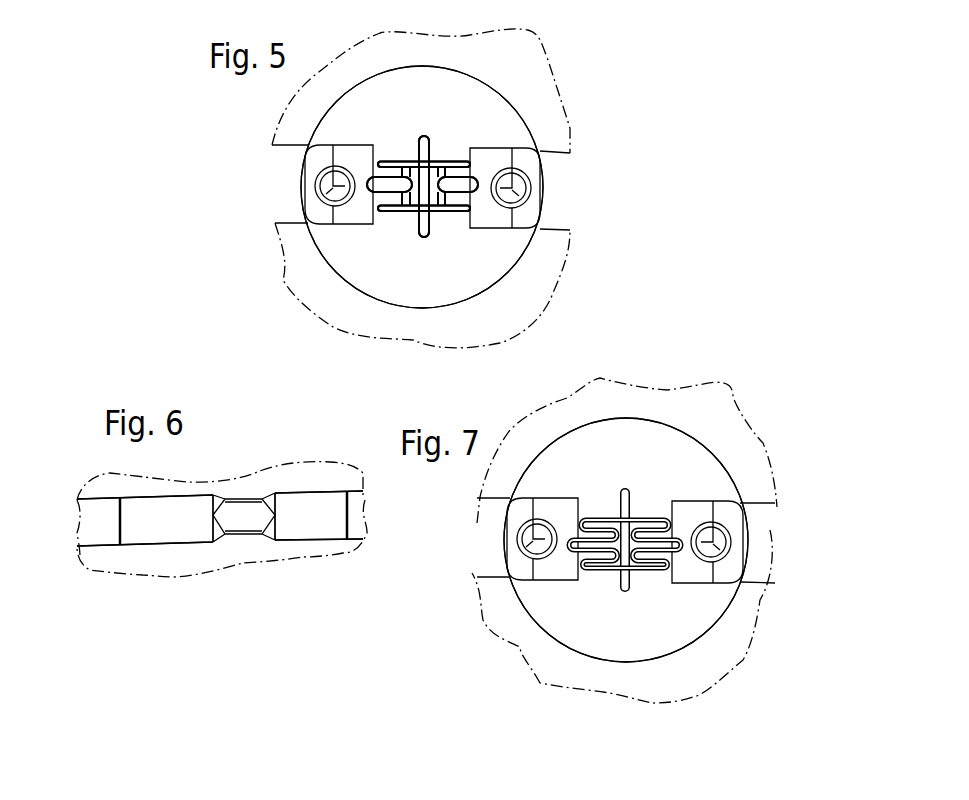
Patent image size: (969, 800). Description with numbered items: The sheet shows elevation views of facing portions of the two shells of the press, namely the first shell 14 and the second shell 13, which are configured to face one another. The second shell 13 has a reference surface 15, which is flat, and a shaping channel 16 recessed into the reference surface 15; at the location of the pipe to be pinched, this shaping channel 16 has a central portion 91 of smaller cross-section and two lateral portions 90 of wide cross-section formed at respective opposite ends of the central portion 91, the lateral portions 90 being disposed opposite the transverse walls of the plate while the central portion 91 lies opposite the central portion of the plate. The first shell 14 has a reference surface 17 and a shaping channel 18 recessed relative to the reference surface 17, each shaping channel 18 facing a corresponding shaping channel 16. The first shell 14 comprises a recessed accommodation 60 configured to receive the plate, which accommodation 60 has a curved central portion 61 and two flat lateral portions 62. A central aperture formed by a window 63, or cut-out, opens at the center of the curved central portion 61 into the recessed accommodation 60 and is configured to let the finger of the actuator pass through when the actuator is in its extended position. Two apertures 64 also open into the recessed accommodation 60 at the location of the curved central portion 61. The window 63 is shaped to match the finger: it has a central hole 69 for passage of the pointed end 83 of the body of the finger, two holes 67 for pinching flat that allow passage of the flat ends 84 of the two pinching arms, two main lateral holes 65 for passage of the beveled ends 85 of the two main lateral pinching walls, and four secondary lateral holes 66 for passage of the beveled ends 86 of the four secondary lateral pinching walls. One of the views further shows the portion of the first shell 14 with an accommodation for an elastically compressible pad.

In FIG. 6, the second shell 13 is at (318, 468).
In FIG. 5, the first shell 14 is at (300, 262).
In FIG. 7, the first shell 14 is at (730, 403).
In FIG. 6, the reference surface 15 is at (238, 488).
In FIG. 6, the shaping channel 16 is at (360, 525).
In FIG. 5, the reference surface 17 is at (587, 4).
In FIG. 5, the shaping channel 18 is at (285, 160).
In FIG. 7, the shaping channel 18 is at (485, 563).
In FIG. 5, the recessed accommodation 60 is at (352, 268).
In FIG. 7, the recessed accommodation 60 is at (706, 614).
In FIG. 5, the curved central portion 61 is at (355, 153).
In FIG. 7, the curved central portion 61 is at (553, 507).
In FIG. 5, the flat lateral portion 62 is at (502, 107).
In FIG. 7, the flat lateral portion 62 is at (673, 445).
In FIG. 5, the window 63 is at (435, 232).
In FIG. 7, the window 63 is at (620, 561).
In FIG. 5, the aperture 64 is at (514, 192).
In FIG. 7, the aperture 64 is at (520, 546).
In FIG. 7, the main lateral hole 65 is at (586, 513).
In FIG. 7, the secondary lateral hole 66 is at (590, 510).
In FIG. 7, the hole for pinching flat 67 is at (624, 490).
In FIG. 7, the central hole 69 is at (647, 512).
In FIG. 5, the pointed end 83 is at (433, 157).
In FIG. 5, the flat end 84 is at (428, 140).
In FIG. 5, the beveled end 85 is at (380, 160).
In FIG. 5, the beveled end 86 is at (396, 160).
In FIG. 6, the lateral portion 90 is at (180, 533).
In FIG. 6, the central portion 91 is at (247, 527).